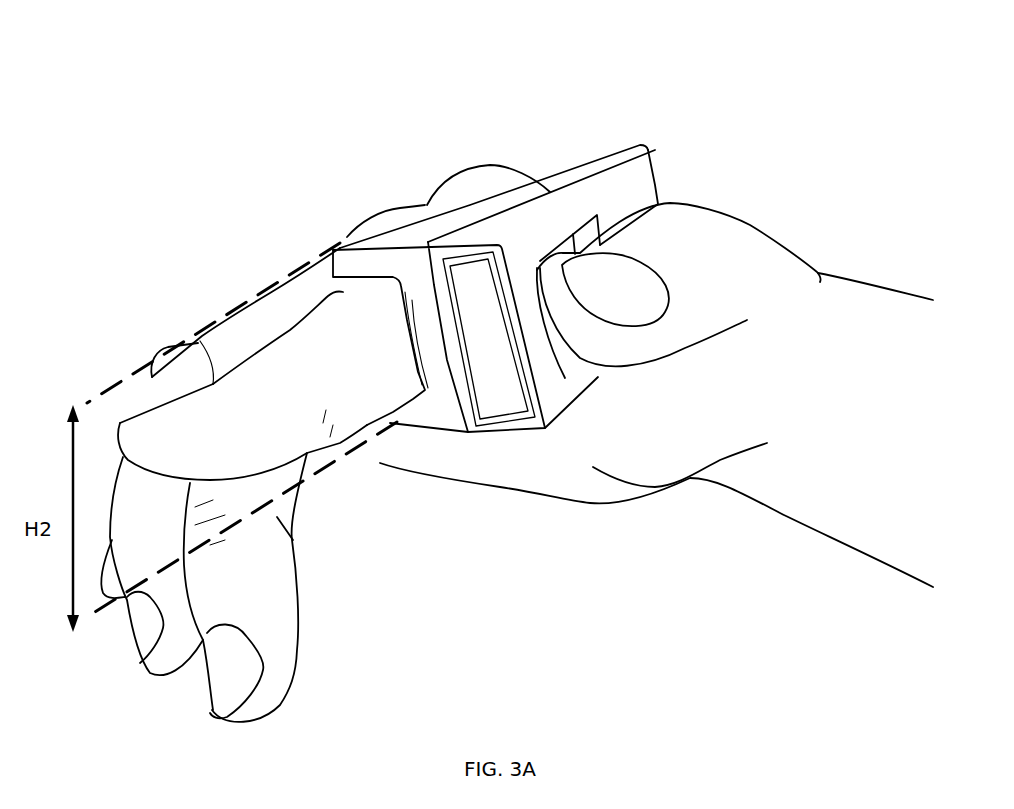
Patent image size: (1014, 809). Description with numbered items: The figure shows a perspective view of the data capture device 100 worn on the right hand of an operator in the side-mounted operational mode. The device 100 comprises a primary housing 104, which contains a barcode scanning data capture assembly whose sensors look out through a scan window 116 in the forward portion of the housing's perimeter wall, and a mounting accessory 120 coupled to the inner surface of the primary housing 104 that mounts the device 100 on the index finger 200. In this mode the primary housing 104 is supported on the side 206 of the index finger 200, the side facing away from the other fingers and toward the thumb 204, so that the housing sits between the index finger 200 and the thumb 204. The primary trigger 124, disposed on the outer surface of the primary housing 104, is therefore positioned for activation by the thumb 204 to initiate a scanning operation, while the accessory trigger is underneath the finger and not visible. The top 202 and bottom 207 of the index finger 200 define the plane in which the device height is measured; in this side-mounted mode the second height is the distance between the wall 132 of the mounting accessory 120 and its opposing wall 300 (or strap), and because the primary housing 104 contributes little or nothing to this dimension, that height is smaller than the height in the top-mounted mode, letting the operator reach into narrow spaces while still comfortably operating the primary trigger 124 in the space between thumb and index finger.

The data capture device 100 is at (530, 304).
The primary housing 104 is at (648, 167).
The scan window 116 is at (470, 283).
The mounting accessory 120 is at (450, 192).
The primary trigger 124 is at (567, 249).
The wall 132 is at (440, 423).
The index finger 200 is at (206, 360).
The top 202 is at (252, 358).
The thumb 204 is at (713, 263).
The side 206 is at (332, 368).
The bottom 207 is at (367, 423).
The opposing wall 300 is at (413, 217).